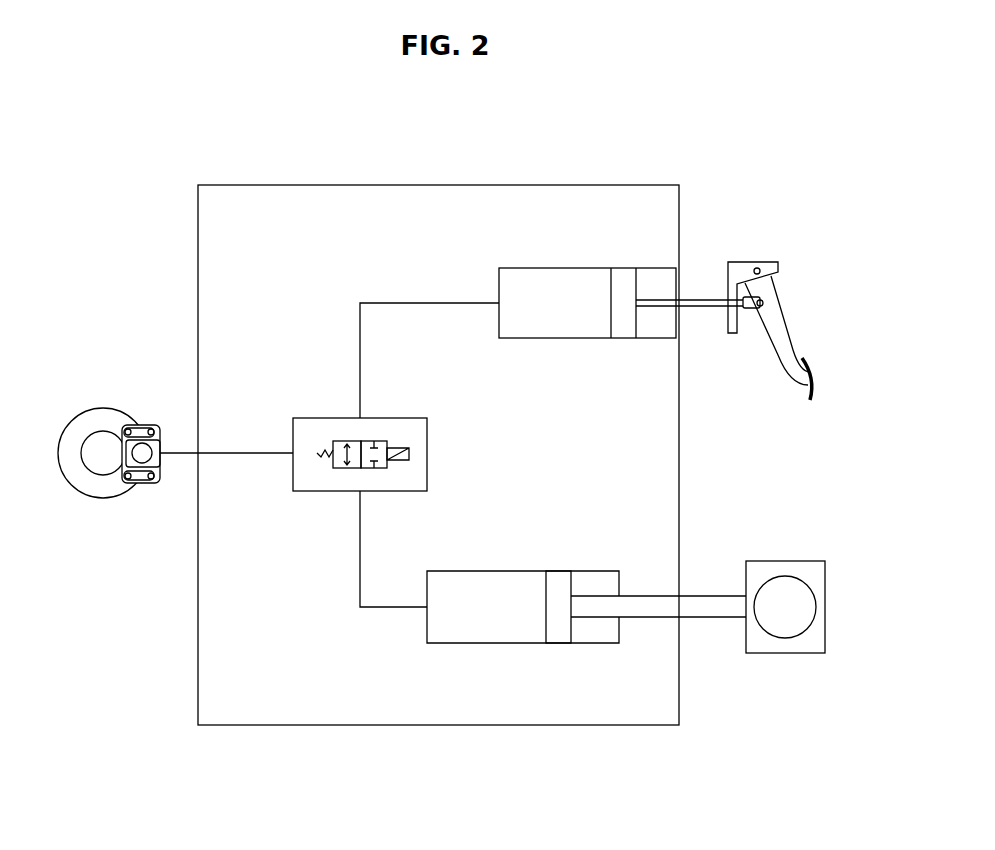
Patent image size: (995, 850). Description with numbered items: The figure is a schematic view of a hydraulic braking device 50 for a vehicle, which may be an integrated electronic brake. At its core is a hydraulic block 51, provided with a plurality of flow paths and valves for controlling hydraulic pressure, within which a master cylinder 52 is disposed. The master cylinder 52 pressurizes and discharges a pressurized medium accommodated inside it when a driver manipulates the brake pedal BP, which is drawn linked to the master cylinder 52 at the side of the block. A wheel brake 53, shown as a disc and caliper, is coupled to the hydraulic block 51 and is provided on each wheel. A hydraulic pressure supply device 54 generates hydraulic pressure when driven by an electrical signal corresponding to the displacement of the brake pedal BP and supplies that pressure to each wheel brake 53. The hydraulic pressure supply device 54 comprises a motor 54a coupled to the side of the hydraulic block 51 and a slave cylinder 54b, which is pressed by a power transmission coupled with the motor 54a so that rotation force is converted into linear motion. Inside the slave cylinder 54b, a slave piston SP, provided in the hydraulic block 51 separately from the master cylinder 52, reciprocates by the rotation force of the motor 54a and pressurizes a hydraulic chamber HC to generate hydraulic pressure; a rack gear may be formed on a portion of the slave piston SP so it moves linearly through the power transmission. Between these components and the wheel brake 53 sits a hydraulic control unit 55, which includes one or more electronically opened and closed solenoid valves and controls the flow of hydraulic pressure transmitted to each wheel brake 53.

The hydraulic braking device 50 is at (568, 118).
The hydraulic block 51 is at (386, 185).
The master cylinder 52 is at (549, 268).
The wheel brake 53 is at (136, 425).
The hydraulic pressure supply device 54 is at (626, 671).
The motor 54a is at (784, 670).
The slave cylinder 54b is at (586, 646).
The hydraulic control unit 55 is at (427, 443).
The brake pedal BP is at (774, 325).
The hydraulic chamber HC is at (456, 571).
The slave piston SP is at (557, 571).